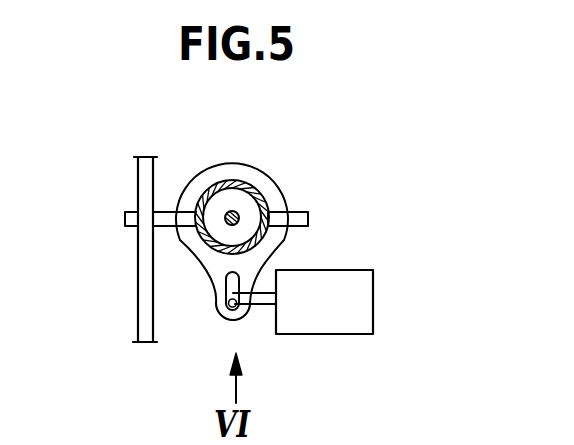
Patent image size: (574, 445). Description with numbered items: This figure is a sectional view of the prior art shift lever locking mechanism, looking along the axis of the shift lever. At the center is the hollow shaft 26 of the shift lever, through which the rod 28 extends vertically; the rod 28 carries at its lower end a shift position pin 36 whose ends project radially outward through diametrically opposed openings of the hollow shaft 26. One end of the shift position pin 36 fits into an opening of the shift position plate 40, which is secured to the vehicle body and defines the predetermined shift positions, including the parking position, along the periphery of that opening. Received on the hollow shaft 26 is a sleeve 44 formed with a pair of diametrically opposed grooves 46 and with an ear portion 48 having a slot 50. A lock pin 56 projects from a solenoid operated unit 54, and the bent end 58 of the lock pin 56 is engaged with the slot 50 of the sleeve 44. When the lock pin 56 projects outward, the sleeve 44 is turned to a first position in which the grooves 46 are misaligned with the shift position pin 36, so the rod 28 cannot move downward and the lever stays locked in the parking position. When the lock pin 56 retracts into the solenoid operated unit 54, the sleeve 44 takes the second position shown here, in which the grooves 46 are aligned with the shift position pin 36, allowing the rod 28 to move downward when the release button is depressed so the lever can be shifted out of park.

The hollow shaft 26 is at (212, 182).
The rod 28 is at (234, 212).
The shift position pin 36 is at (125, 218).
The shift position plate 40 is at (138, 282).
The sleeve 44 is at (280, 181).
The grooves 46 is at (289, 211).
The ear portion 48 is at (243, 318).
The slot 50 is at (227, 286).
The solenoid operated unit 54 is at (365, 289).
The lock pin 56 is at (259, 308).
The bent end 58 is at (227, 304).